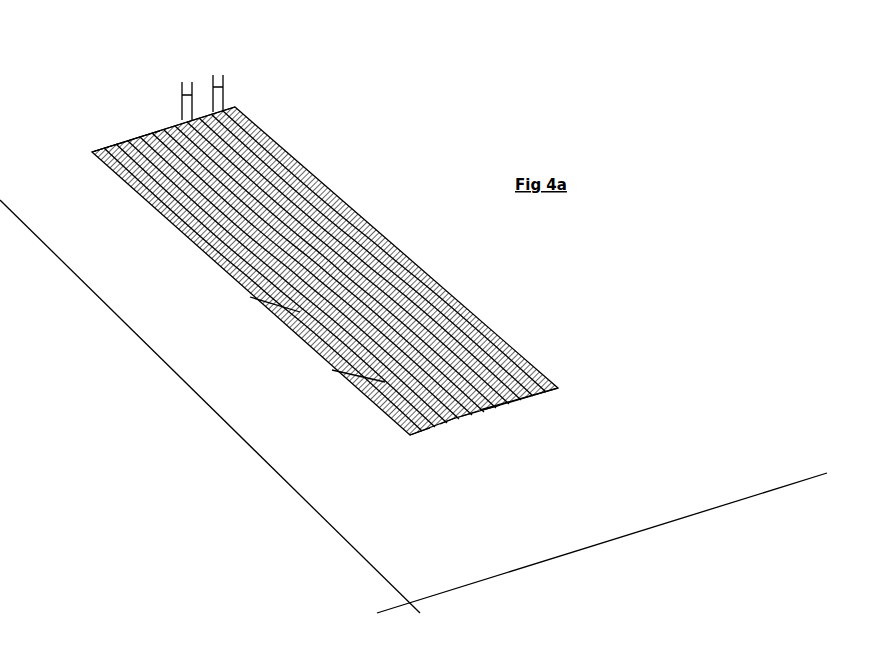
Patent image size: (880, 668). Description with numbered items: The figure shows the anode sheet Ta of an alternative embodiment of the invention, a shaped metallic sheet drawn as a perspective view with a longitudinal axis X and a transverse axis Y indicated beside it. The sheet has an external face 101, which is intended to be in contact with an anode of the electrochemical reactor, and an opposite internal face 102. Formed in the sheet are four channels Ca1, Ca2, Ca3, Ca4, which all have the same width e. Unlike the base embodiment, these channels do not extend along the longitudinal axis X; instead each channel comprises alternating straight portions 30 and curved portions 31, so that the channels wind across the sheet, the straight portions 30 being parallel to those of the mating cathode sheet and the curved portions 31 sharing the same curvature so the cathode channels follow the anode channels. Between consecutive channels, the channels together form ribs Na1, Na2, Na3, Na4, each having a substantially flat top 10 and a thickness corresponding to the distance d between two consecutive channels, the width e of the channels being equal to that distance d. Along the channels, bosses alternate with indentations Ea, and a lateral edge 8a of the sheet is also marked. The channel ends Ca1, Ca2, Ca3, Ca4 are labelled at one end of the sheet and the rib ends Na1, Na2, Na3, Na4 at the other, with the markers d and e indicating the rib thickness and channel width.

The flat top 10 is at (507, 348).
The external face 101 is at (325, 218).
The internal face 102 is at (553, 428).
The straight portions 30 is at (388, 244).
The curved portions 31 is at (420, 278).
The lateral edge 8a is at (258, 300).
The indentations Ea is at (340, 372).
The anode sheet Ta is at (324, 95).
The channel Ca1 is at (94, 150).
The channel Ca2 is at (113, 142).
The channel Ca3 is at (133, 136).
The channel Ca4 is at (155, 130).
The rib Na1 is at (423, 432).
The rib Na2 is at (448, 420).
The rib Na3 is at (470, 418).
The rib Na4 is at (490, 415).
The distance between two consecutive channels d is at (186, 92).
The channel width e is at (222, 84).
The longitudinal axis X is at (47, 248).
The Y axis Y is at (760, 494).